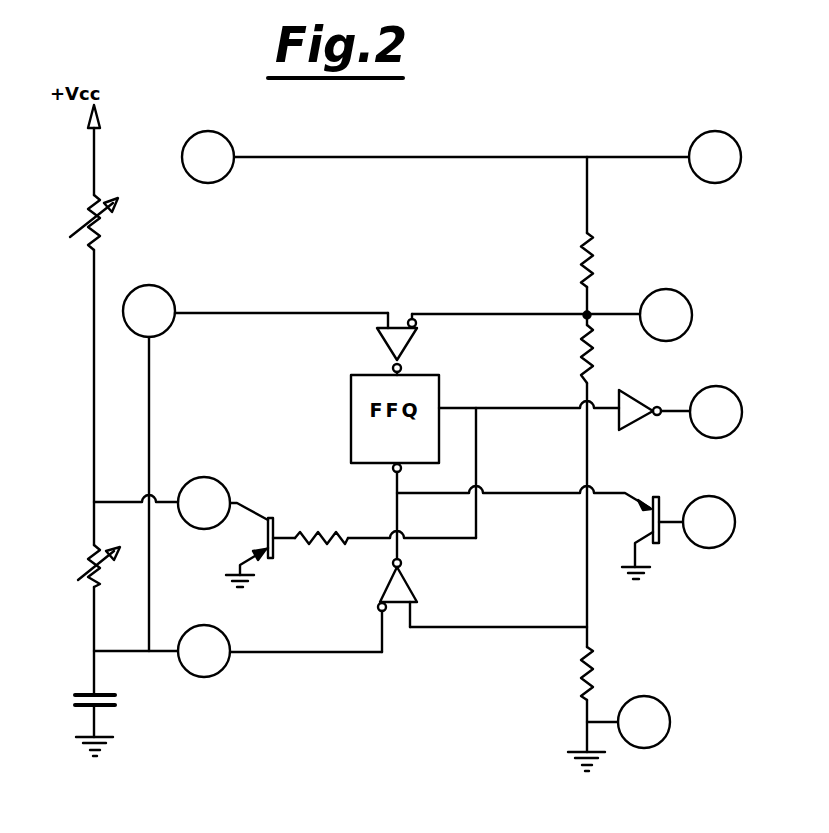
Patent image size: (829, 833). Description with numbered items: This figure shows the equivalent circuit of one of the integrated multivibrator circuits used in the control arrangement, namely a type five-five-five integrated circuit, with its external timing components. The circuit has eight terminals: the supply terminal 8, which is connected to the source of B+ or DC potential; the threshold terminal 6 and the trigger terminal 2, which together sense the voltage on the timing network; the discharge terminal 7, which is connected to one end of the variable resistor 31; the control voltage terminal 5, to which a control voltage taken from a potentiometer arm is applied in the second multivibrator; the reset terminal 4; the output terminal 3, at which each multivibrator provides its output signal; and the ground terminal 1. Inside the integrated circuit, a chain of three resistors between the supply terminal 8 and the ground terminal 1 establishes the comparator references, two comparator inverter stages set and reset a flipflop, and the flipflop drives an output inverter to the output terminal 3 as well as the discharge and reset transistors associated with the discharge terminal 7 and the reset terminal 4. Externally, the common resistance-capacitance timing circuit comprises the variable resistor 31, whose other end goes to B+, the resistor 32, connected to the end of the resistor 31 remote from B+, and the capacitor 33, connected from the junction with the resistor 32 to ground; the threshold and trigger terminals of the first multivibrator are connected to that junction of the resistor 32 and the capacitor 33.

The ground terminal 1 is at (628, 722).
The trigger terminal 2 is at (238, 651).
The output terminal 3 is at (680, 412).
The reset terminal 4 is at (678, 537).
The control voltage terminal 5 is at (552, 315).
The threshold terminal 6 is at (255, 468).
The discharge terminal 7 is at (236, 532).
The supply voltage terminal 8 is at (461, 157).
The resistor 31 is at (105, 228).
The resistor 32 is at (88, 560).
The capacitor 33 is at (117, 704).